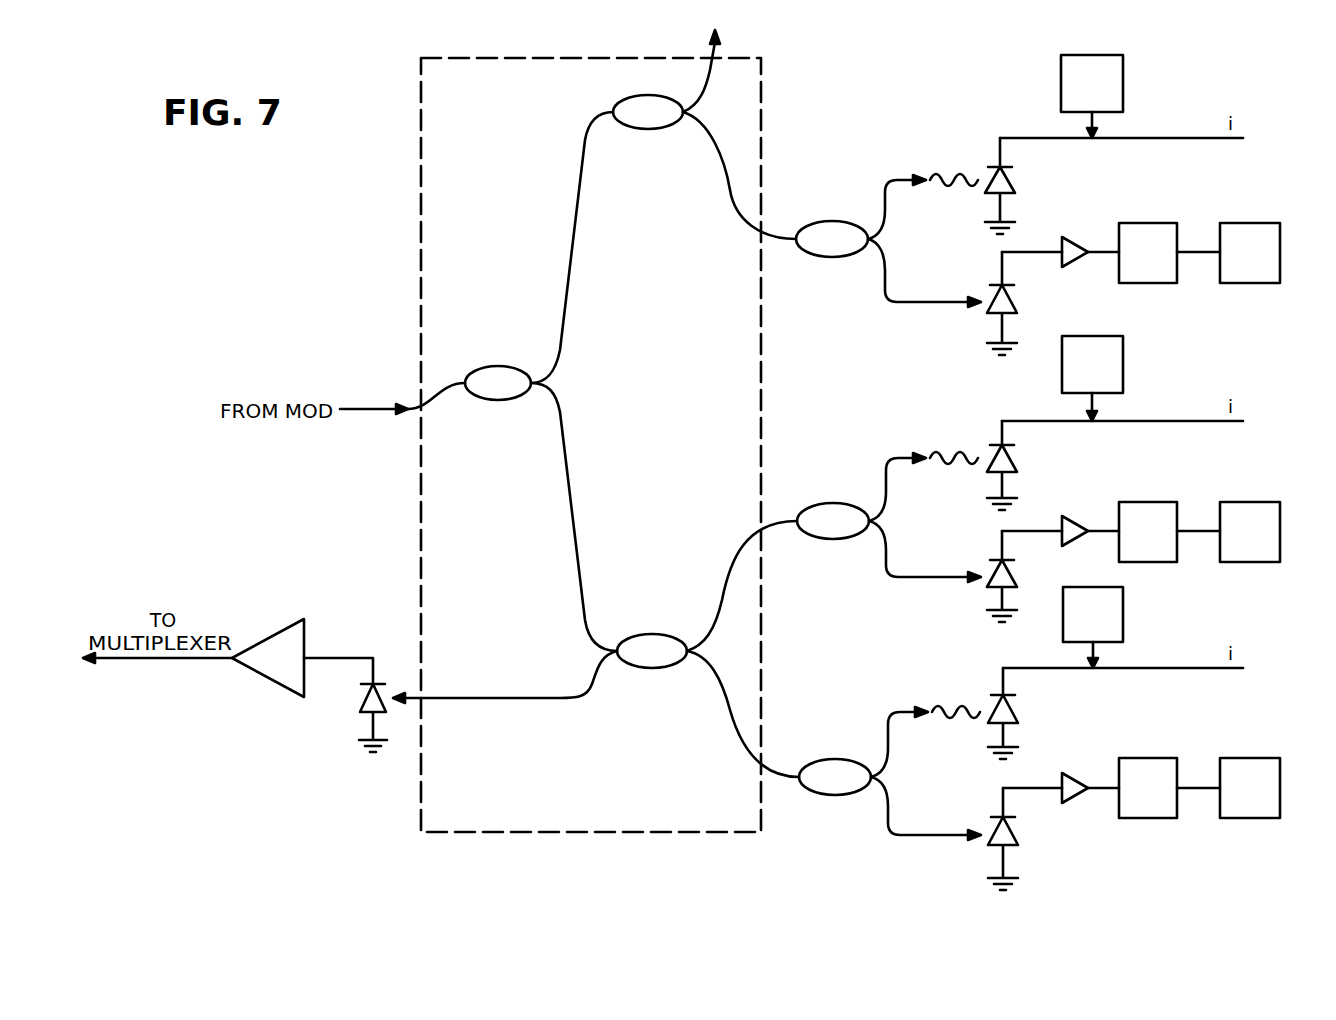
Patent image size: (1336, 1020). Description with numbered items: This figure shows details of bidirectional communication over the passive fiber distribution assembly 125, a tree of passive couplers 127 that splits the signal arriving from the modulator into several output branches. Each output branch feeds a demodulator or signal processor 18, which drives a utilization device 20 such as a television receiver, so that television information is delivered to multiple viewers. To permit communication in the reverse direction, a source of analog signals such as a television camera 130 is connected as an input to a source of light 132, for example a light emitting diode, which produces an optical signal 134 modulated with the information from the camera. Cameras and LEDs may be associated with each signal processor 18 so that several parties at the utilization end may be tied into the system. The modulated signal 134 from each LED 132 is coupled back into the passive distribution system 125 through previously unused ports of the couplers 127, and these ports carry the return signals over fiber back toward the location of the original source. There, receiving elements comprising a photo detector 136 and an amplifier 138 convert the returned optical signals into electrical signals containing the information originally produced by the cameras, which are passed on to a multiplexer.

The demodulator or signal processor 18 is at (1139, 223).
The utilization device 20 is at (1280, 252).
The fiber distribution assembly 125 is at (419, 286).
The passive coupler 127 is at (657, 130).
The television camera 130 is at (1123, 72).
The source of light 132 is at (1014, 182).
The optical signal 134 is at (953, 170).
The photo detector 136 is at (362, 700).
The amplifier 138 is at (296, 620).